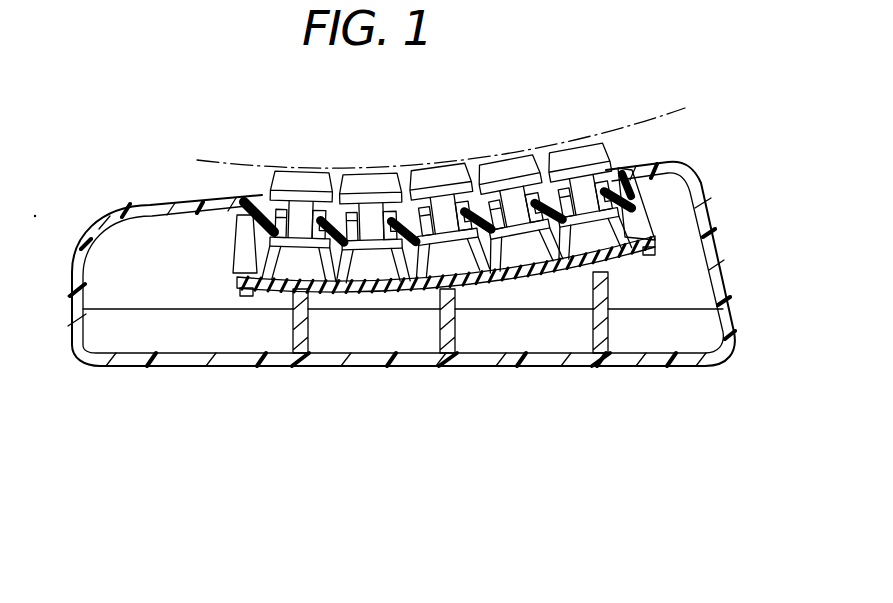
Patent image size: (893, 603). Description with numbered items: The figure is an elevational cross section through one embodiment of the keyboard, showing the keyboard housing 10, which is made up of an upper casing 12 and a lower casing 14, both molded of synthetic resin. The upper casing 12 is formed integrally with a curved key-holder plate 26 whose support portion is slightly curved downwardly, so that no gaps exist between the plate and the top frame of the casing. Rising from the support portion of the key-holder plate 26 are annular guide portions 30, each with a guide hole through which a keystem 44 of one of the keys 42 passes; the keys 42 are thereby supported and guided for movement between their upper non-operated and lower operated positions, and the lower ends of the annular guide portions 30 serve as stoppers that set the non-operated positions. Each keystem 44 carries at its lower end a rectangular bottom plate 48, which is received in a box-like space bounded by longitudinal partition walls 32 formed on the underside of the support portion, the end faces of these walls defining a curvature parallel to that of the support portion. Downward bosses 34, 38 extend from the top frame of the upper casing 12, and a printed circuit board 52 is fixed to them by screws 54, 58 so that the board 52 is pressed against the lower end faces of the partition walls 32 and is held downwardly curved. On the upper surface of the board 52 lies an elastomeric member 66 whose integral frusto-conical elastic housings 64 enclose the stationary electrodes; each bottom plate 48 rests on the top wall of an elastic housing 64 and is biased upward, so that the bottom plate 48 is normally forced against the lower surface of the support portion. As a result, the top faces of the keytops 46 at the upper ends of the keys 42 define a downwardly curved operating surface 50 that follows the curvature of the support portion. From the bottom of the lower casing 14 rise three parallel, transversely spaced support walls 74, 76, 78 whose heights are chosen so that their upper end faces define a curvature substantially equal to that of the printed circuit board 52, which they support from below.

The keyboard housing 10 is at (723, 273).
The upper casing 12 is at (700, 204).
The lower casing 14 is at (645, 352).
The key-holder plate 26 is at (345, 214).
The annular guide portions 30 is at (417, 216).
The longitudinal partition walls 32 is at (397, 270).
The downward boss 34 is at (641, 208).
The downward boss 38 is at (243, 244).
The keys 42 is at (568, 135).
The keystems 44 is at (438, 205).
The keytops 46 is at (511, 165).
The rectangular bottom plates 48 is at (372, 292).
The operating surface 50 is at (650, 118).
The printed circuit board 52 is at (283, 291).
The screw 54 is at (650, 255).
The screw 58 is at (241, 291).
The frusto-conical elastic housings 64 is at (467, 275).
The elastomeric member 66 is at (508, 310).
The support wall 74 is at (597, 327).
The support wall 76 is at (443, 331).
The support wall 78 is at (298, 331).